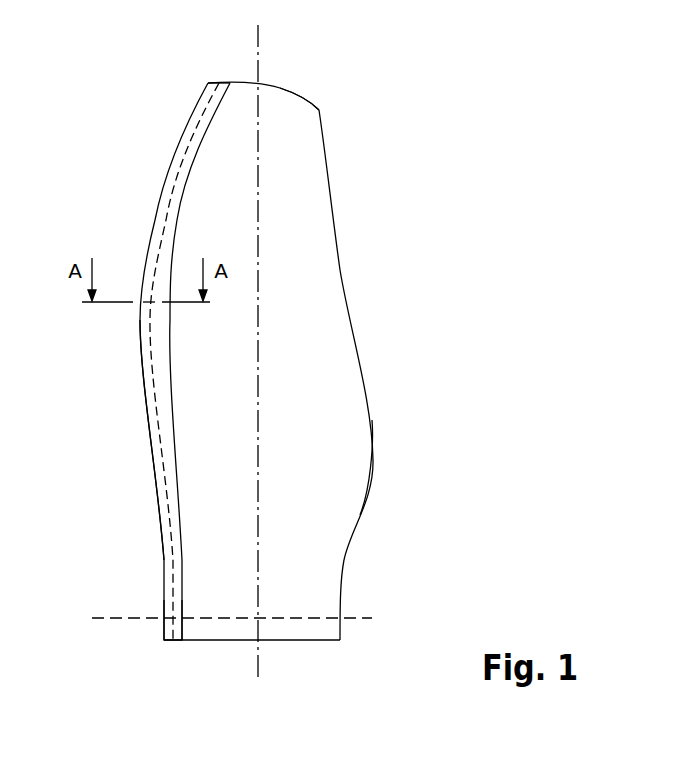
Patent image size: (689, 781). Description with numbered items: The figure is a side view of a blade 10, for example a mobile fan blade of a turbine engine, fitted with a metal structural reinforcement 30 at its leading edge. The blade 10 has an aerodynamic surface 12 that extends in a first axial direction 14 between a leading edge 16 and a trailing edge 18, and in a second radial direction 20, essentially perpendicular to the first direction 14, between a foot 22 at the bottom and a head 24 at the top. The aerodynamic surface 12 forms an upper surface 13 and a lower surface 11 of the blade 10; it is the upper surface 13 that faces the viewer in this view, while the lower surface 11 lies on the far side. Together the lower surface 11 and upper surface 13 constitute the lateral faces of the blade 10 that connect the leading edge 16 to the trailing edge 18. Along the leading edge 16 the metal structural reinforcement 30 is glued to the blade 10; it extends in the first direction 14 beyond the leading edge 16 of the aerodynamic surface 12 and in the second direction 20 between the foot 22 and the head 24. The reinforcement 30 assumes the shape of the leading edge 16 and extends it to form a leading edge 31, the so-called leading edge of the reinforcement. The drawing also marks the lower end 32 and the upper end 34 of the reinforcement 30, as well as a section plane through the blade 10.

The blade 10 is at (367, 216).
The lower surface 11 is at (404, 503).
The aerodynamic surface 12 is at (340, 450).
The upper surface 13 is at (332, 564).
The first axial direction 14 is at (97, 617).
The leading edge 16 is at (157, 382).
The trailing edge 18 is at (348, 298).
The second radial direction 20 is at (258, 48).
The foot 22 is at (302, 640).
The head 24 is at (305, 98).
The metal structural reinforcement 30 is at (165, 196).
The leading edge of the reinforcement 31 is at (152, 438).
The lower end of strip 32 is at (165, 640).
The upper end of strip 34 is at (222, 80).